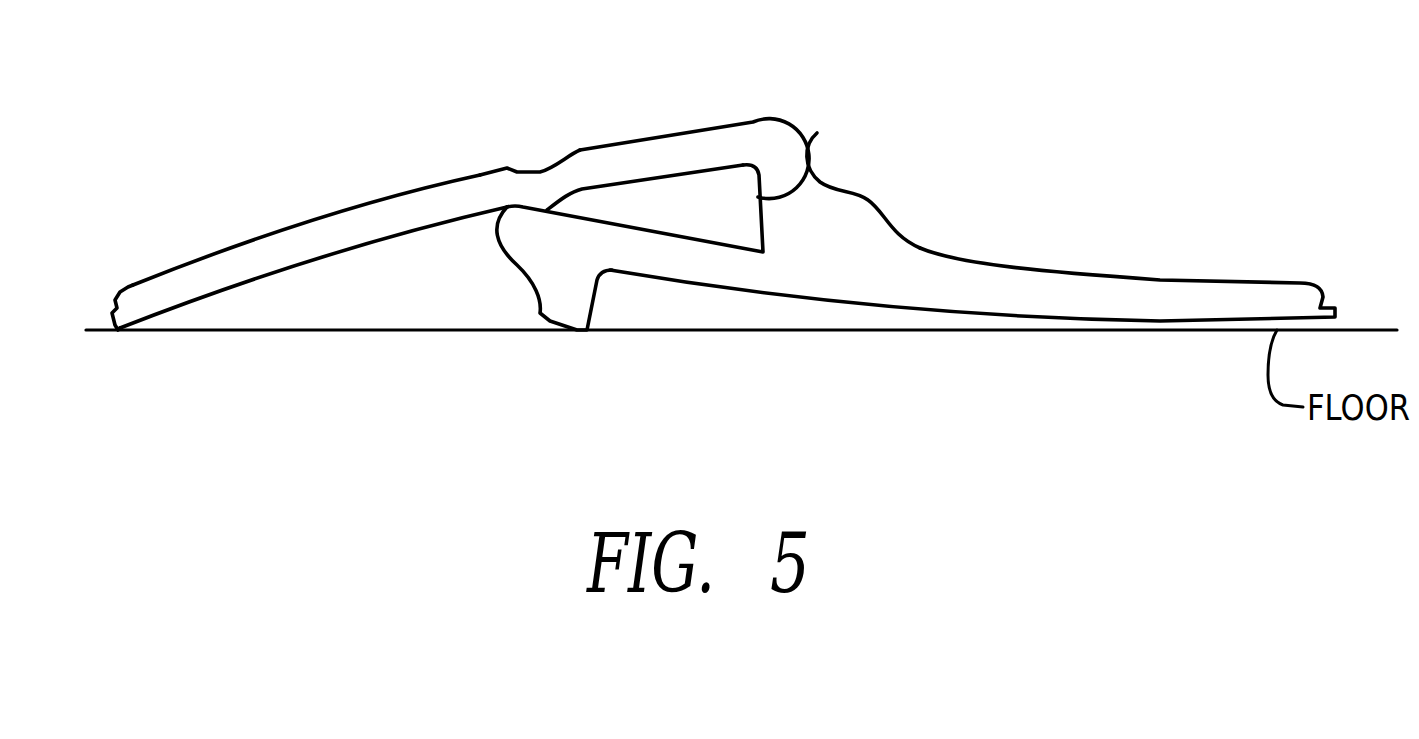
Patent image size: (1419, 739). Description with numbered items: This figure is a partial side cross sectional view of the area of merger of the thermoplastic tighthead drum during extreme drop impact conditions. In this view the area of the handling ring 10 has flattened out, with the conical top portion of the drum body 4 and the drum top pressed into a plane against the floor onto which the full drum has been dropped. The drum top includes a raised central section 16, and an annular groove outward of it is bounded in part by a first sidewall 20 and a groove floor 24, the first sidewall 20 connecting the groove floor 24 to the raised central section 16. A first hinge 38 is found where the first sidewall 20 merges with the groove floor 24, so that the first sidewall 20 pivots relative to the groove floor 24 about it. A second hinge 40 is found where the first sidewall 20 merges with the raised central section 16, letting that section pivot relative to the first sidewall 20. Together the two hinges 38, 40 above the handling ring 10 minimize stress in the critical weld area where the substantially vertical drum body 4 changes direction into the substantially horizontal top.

The cylindrical body 4 is at (1160, 295).
The handling ring 10 is at (547, 265).
The raised central section 16 is at (323, 238).
The first sidewall 20 is at (672, 150).
The groove floor 24 is at (817, 133).
The first hinge 38 is at (760, 137).
The second hinge 40 is at (583, 173).